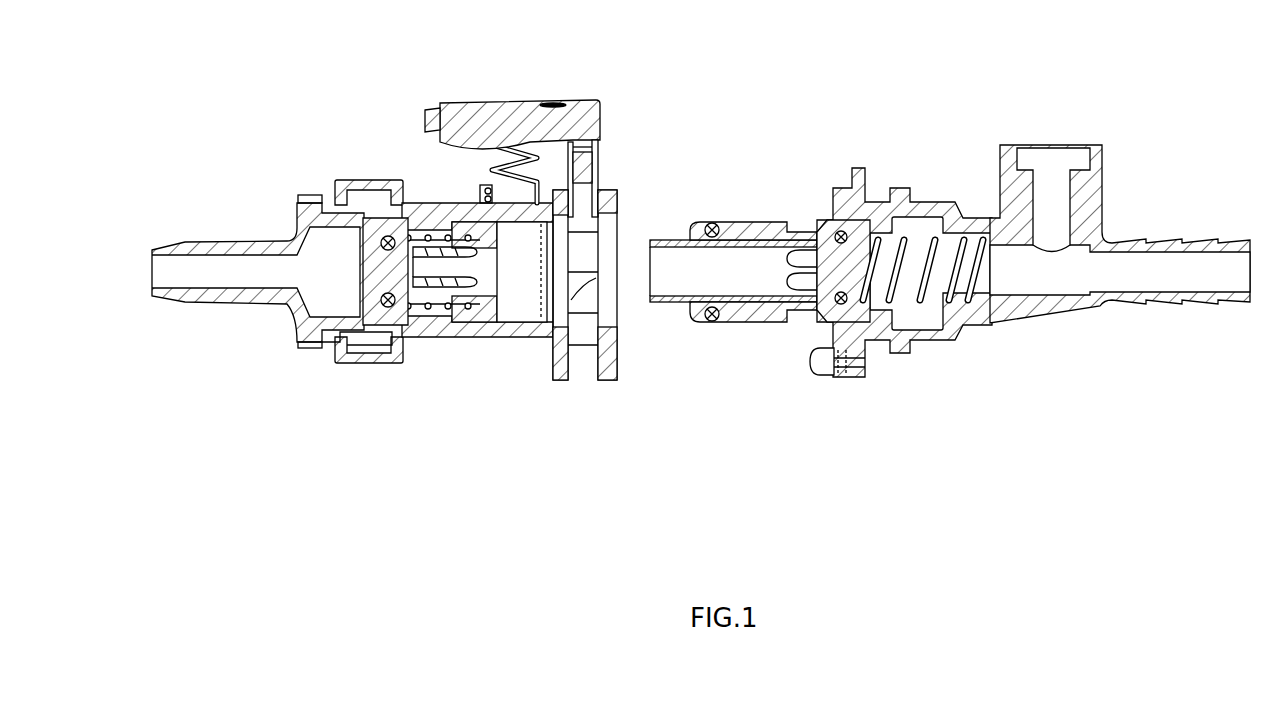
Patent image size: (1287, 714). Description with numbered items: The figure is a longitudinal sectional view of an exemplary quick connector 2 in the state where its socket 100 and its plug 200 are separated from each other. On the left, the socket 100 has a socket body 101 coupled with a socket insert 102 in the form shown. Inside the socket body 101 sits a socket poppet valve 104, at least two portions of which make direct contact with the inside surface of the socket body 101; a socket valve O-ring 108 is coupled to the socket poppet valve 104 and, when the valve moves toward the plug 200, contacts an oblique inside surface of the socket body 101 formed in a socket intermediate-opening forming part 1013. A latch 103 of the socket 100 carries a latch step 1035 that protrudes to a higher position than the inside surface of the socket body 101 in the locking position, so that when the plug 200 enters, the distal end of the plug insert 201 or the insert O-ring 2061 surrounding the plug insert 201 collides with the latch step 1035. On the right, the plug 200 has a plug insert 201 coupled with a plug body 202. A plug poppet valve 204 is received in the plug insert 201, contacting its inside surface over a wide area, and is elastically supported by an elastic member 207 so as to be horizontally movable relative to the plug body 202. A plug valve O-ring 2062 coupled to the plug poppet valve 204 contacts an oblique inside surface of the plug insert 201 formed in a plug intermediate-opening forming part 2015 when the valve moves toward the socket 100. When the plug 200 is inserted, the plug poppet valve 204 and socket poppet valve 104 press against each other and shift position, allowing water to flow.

The quick connector 2 is at (667, 457).
The socket 100 is at (384, 236).
The socket body 101 is at (515, 325).
The socket insert 102 is at (228, 296).
The latch 103 is at (585, 102).
The socket poppet valve 104 is at (403, 256).
The socket valve O-ring 108 is at (355, 353).
The socket intermediate-opening forming part 1013 is at (388, 345).
The latch step 1035 is at (588, 312).
The plug 200 is at (950, 270).
The plug insert 201 is at (747, 312).
The plug body 202 is at (1082, 305).
The plug poppet valve 204 is at (822, 252).
The insert O-ring 2061 is at (712, 223).
The plug valve O-ring 2062 is at (842, 231).
The elastic member 207 is at (905, 240).
The plug intermediate-opening forming part 2015 is at (828, 373).